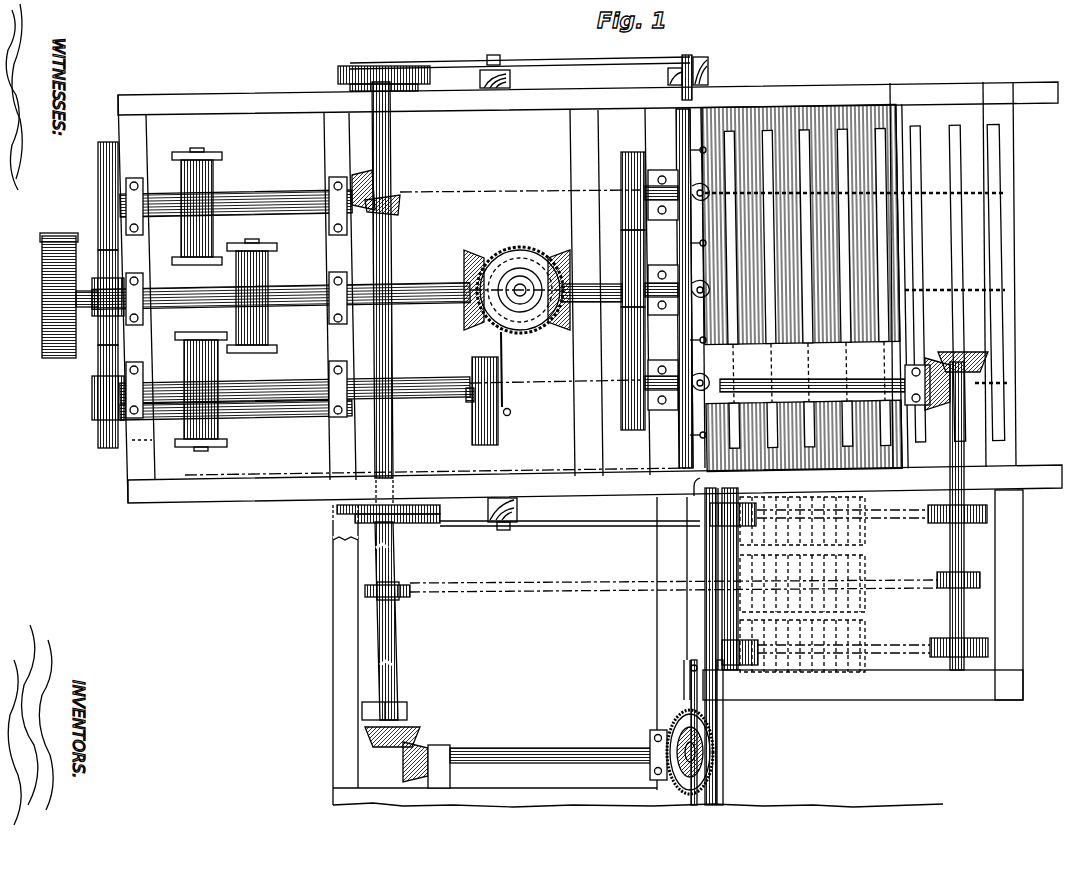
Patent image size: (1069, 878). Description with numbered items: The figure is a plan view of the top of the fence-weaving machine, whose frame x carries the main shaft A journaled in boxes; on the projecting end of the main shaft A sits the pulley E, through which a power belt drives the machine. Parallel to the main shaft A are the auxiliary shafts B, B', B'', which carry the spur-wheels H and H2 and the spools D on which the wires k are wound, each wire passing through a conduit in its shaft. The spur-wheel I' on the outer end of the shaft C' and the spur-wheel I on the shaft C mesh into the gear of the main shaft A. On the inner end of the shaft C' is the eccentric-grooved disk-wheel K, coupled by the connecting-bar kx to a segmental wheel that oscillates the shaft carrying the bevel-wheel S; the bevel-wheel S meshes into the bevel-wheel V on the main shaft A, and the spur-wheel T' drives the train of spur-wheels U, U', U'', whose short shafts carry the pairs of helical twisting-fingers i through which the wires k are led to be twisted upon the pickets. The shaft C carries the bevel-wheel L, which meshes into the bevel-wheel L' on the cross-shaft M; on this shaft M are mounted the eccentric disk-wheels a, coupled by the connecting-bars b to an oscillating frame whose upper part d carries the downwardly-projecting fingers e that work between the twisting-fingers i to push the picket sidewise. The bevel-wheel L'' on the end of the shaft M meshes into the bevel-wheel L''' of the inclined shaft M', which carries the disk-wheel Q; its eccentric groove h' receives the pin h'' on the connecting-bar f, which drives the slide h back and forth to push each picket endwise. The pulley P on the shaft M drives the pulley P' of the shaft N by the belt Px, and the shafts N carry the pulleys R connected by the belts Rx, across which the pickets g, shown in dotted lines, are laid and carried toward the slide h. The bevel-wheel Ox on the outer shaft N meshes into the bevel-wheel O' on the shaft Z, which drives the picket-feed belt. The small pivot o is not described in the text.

The disk-wheel a is at (340, 66).
The connecting-bar b is at (529, 293).
The upper part of oscillating frame d is at (701, 275).
The downwardly-projecting fingers e is at (678, 153).
The pickets g is at (742, 243).
The slide h is at (678, 680).
The eccentric groove h' is at (721, 732).
The pin h'' is at (736, 732).
The twisting-fingers i is at (705, 293).
The wires k is at (705, 383).
The connecting-bar kx is at (502, 360).
The pivot pin o is at (514, 407).
The connecting-bar f is at (718, 706).
The frame x is at (142, 443).
The main shaft A is at (418, 286).
The auxiliary shaft B is at (281, 263).
The auxiliary shaft B' is at (189, 275).
The auxiliary shaft B'' is at (295, 378).
The auxiliary shaft C is at (236, 184).
The auxiliary shaft C' is at (236, 418).
The spools D is at (216, 163).
The pulley E is at (42, 266).
The spur-wheel H is at (100, 205).
The spur-wheel H2 is at (96, 373).
The spur-wheel I is at (108, 186).
The spur-wheel I' is at (108, 410).
The disk-wheel K is at (230, 182).
The bevel-wheel L is at (363, 177).
The bevel-wheel L' is at (394, 192).
The bevel-wheel L'' is at (403, 719).
The bevel-wheel L''' is at (434, 747).
The cross-shaft M is at (397, 401).
The inclined shaft M' is at (551, 747).
The shaft N is at (735, 550).
The bevel-wheel O' is at (926, 399).
The bevel-wheel Ox is at (960, 356).
The pulley P is at (389, 581).
The pulley P' is at (953, 571).
The belt Px is at (556, 580).
The disk-wheel Q is at (690, 716).
The pulleys R is at (740, 508).
The belts Rx is at (843, 581).
The bevel-wheel S is at (522, 332).
The spur-wheel T' is at (558, 280).
The spur-wheel U is at (642, 184).
The spur-wheel U' is at (642, 268).
The spur-wheel U'' is at (642, 368).
The bevel-wheel V is at (464, 330).
The shaft Z is at (812, 377).